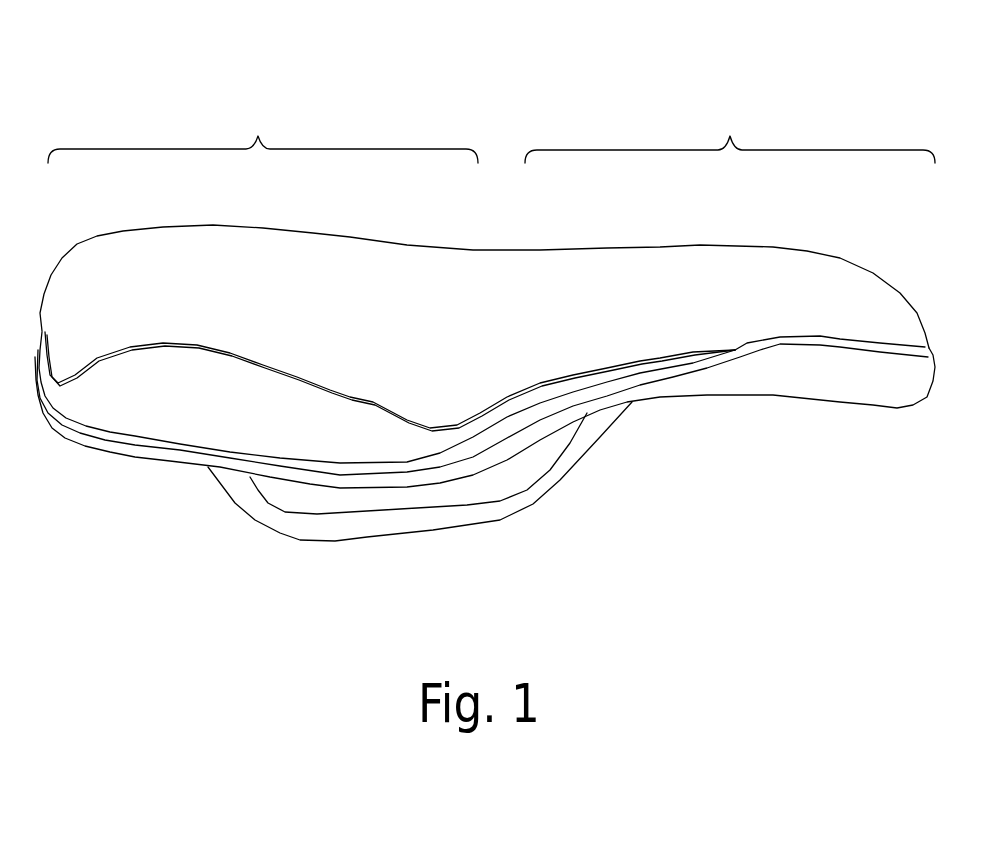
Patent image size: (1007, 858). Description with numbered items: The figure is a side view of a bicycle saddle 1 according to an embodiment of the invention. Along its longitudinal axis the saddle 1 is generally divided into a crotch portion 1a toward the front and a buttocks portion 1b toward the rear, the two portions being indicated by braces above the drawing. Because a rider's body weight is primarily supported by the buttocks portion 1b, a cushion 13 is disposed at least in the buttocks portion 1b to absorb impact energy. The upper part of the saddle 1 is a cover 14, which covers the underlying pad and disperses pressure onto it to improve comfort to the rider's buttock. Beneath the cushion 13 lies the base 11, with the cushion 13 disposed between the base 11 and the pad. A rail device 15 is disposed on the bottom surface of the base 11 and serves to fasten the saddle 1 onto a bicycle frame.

The saddle 1 is at (497, 45).
The crotch portion 1a is at (730, 130).
The buttocks portion 1b is at (263, 130).
The base 11 is at (485, 421).
The cushion 13 is at (387, 438).
The cover 14 is at (484, 304).
The rail device 15 is at (420, 508).